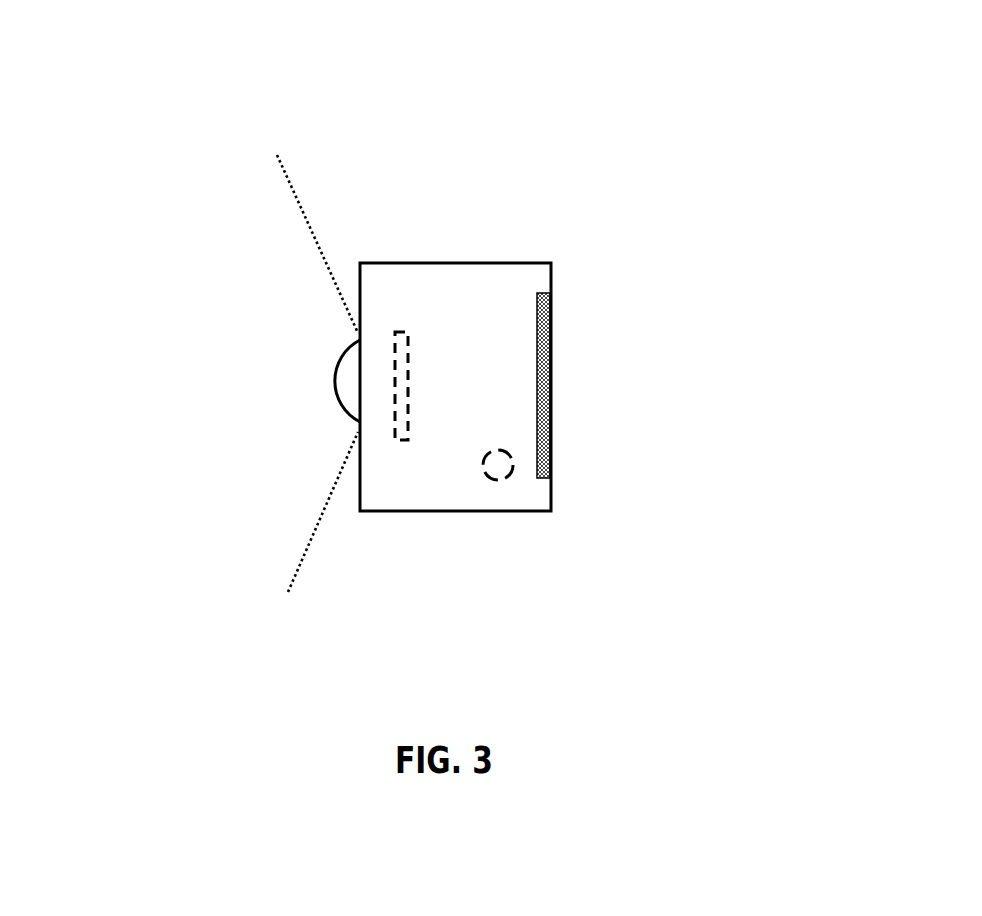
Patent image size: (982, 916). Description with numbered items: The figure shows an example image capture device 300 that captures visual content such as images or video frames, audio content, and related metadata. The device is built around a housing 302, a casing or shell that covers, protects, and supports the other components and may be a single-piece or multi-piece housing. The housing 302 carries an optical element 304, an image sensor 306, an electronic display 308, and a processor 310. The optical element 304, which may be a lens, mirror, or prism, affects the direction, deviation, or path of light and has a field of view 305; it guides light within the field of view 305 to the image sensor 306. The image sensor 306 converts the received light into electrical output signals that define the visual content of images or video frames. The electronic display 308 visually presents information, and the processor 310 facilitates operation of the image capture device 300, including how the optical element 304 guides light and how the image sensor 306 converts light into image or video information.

The image capture device 300 is at (608, 151).
The housing 302 is at (447, 512).
The optical element 304 is at (357, 424).
The field of view 305 is at (315, 268).
The image sensor 306 is at (405, 330).
The electronic display 308 is at (552, 388).
The processor 310 is at (492, 480).